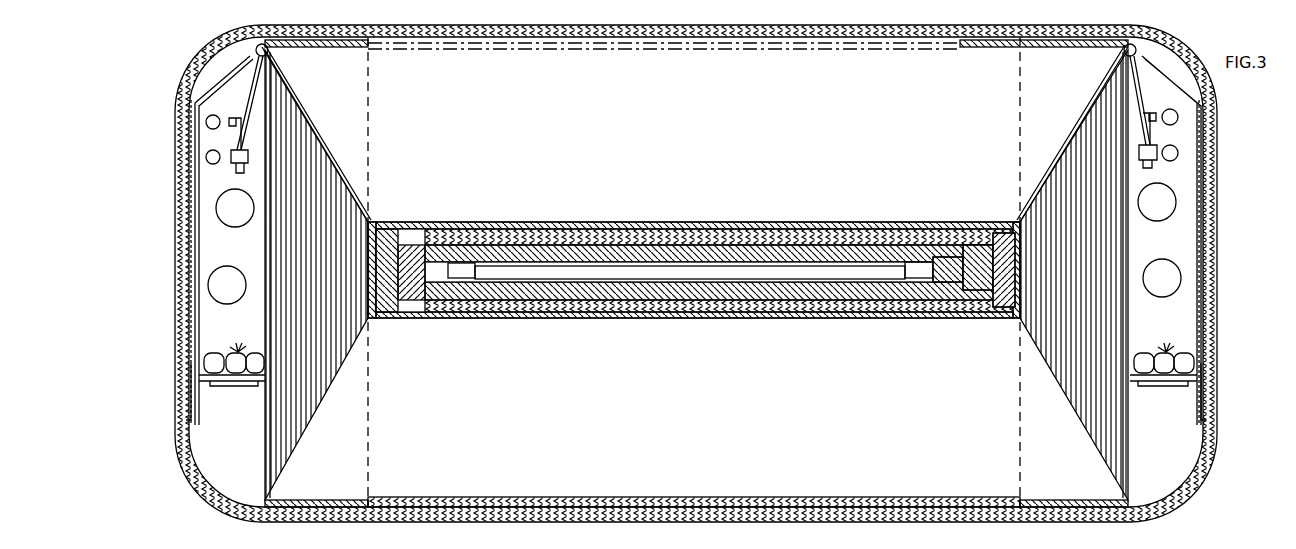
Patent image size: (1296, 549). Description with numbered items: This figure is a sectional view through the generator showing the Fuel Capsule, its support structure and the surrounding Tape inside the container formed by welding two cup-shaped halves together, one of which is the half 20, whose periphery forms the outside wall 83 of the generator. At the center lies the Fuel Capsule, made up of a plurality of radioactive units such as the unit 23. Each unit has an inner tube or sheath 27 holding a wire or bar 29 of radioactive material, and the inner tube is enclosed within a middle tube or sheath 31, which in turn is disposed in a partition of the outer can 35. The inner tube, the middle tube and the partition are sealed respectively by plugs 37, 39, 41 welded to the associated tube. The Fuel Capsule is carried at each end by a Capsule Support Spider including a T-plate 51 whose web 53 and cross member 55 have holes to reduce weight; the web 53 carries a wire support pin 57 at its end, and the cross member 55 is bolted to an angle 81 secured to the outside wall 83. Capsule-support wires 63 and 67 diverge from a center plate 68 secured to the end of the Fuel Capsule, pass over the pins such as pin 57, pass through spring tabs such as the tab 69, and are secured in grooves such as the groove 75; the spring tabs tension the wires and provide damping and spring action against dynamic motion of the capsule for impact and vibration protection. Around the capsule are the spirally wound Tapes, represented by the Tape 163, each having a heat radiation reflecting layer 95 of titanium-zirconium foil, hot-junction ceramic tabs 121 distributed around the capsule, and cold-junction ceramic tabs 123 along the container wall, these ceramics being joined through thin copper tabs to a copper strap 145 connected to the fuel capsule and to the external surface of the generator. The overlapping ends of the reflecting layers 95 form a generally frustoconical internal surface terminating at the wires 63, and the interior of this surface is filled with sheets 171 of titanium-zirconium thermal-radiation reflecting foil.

The cup-shaped half 20 is at (1007, 26).
The wire support pin 57 is at (263, 40).
The heat radiation reflecting layer 95 is at (366, 44).
The Tape 163 is at (978, 46).
The capsule-support wire 67 is at (292, 92).
The capsule-support wire 63 is at (1100, 90).
The groove 75 is at (1152, 116).
The spring tab 69 is at (1155, 163).
The T-plate 51 is at (190, 250).
The sheet of titanium-zirconium thermal-radiation reflecting foil 171 is at (283, 250).
The center plate 68 is at (1013, 226).
The copper strap 145 is at (432, 228).
The alumina ceramic tab 121 is at (485, 228).
The wire or bar of radioactive material 29 is at (676, 270).
The radioactive unit 23 is at (919, 269).
The web 53 is at (200, 326).
The outer can 35 is at (402, 302).
The middle tube or sheath 31 is at (678, 302).
The inner tube or sheath 27 is at (694, 270).
The plug 37 is at (948, 284).
The plug 39 is at (978, 292).
The plug 41 is at (1012, 306).
The outside wall 83 is at (185, 405).
The cross member 55 is at (208, 386).
The angle 81 is at (236, 388).
The alumina ceramic tab 123 is at (706, 500).